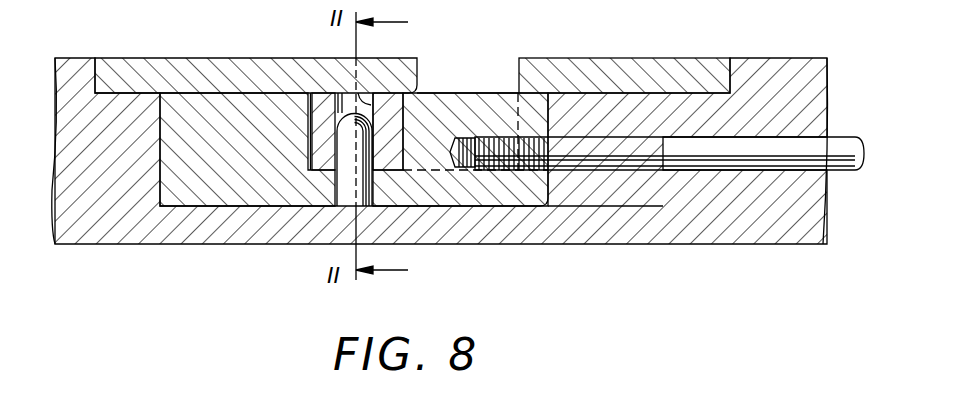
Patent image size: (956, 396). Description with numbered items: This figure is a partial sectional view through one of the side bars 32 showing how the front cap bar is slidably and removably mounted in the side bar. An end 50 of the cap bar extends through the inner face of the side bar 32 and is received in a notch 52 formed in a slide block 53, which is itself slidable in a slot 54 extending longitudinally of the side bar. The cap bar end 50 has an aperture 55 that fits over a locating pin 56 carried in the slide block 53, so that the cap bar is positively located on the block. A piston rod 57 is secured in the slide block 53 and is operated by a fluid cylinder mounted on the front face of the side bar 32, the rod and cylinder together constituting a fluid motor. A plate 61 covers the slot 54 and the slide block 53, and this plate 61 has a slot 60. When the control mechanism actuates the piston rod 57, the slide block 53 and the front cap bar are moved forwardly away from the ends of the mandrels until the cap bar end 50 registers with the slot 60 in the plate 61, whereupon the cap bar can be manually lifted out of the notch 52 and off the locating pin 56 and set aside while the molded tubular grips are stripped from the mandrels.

The side bar 32 is at (137, 246).
The end of the cap bar 50 is at (394, 118).
The notch 52 is at (308, 108).
The slide block 53 is at (230, 208).
The slot 54 is at (602, 200).
The aperture 55 is at (371, 93).
The locating pin 56 is at (343, 198).
The piston rod 57 is at (627, 147).
The slot in the plate 60 is at (517, 72).
The plate 61 is at (197, 66).